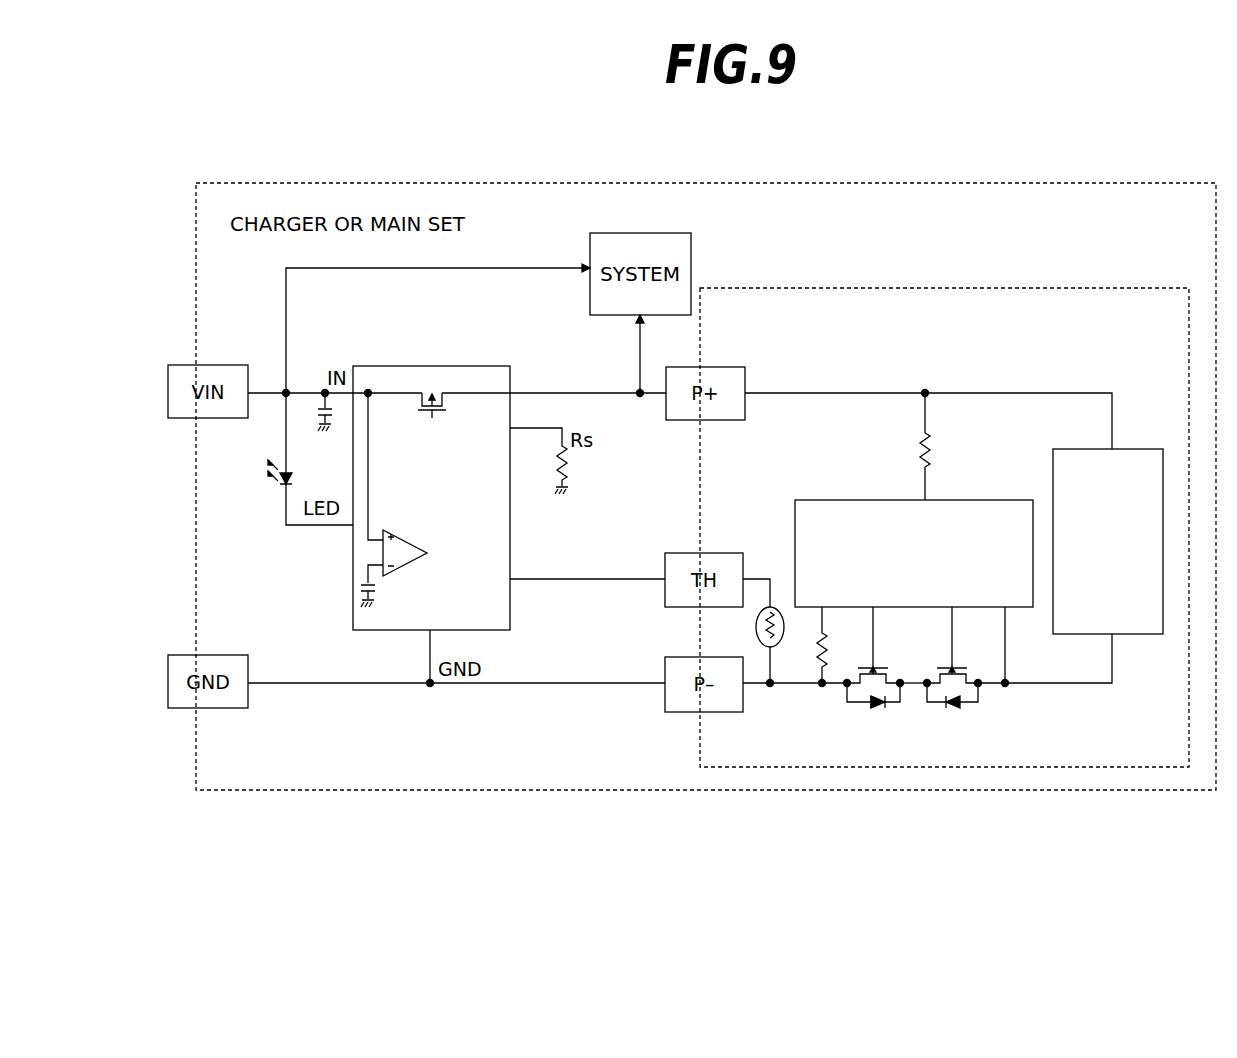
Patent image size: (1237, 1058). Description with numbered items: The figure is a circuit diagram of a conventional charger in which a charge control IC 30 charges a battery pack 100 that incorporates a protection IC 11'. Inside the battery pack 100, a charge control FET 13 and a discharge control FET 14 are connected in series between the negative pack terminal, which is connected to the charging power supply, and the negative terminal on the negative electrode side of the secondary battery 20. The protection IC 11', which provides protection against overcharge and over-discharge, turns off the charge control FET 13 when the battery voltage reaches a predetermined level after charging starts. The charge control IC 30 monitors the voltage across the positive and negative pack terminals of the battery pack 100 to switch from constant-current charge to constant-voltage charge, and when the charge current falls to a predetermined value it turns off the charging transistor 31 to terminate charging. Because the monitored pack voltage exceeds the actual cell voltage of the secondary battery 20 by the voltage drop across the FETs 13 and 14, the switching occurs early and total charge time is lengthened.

The battery pack 100 is at (987, 288).
The charge control IC 30 is at (459, 483).
The charging transistor 31 is at (412, 540).
The protection IC 11' is at (916, 536).
The secondary battery 20 is at (1128, 449).
The charge control FET 13 is at (863, 692).
The discharge control FET 14 is at (967, 692).